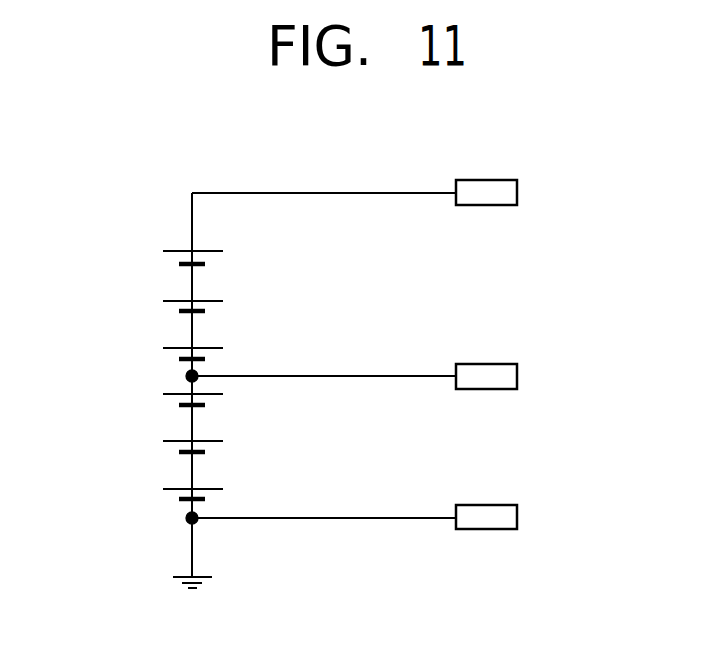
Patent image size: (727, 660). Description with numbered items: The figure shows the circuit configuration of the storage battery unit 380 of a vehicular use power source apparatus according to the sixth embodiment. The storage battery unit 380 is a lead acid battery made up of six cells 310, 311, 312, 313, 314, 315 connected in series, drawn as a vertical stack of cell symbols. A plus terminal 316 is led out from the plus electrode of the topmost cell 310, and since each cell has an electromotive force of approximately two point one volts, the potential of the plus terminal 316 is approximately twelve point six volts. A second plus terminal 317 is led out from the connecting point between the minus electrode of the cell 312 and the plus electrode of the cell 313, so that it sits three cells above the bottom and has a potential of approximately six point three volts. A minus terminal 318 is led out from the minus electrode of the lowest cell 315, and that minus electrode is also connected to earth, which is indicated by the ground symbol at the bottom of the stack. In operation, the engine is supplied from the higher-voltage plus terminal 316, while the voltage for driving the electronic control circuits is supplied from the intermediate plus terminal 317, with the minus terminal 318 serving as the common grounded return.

The cell 310 is at (160, 258).
The cell 311 is at (160, 305).
The cell 312 is at (160, 354).
The cell 313 is at (160, 401).
The cell 314 is at (160, 448).
The cell 315 is at (160, 496).
The plus terminal 316 is at (519, 191).
The plus terminal 317 is at (519, 374).
The minus terminal 318 is at (519, 515).
The storage battery unit 380 is at (525, 132).